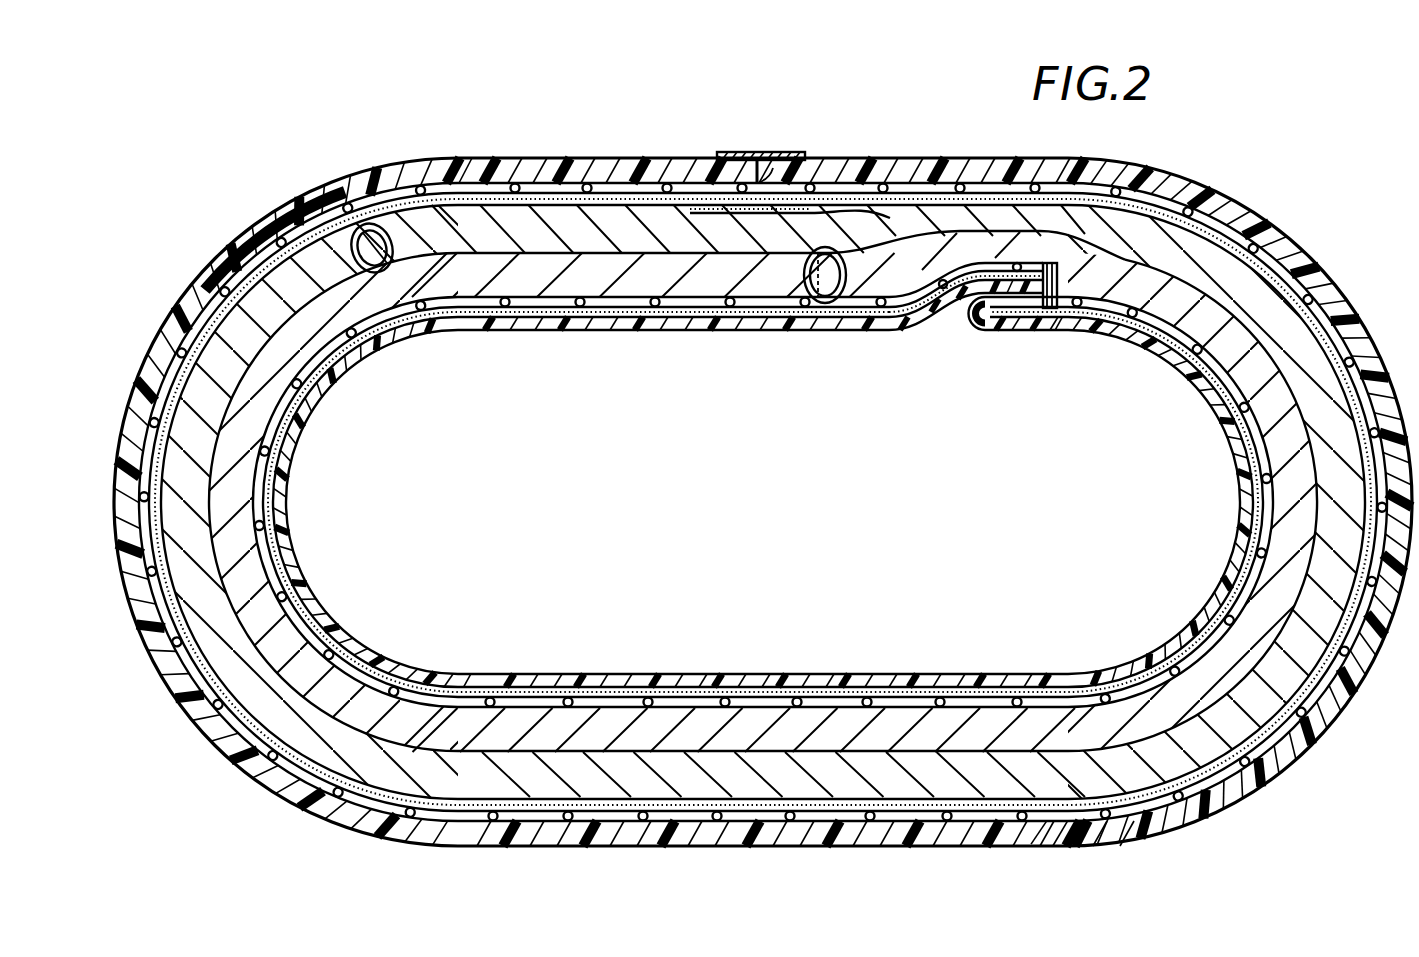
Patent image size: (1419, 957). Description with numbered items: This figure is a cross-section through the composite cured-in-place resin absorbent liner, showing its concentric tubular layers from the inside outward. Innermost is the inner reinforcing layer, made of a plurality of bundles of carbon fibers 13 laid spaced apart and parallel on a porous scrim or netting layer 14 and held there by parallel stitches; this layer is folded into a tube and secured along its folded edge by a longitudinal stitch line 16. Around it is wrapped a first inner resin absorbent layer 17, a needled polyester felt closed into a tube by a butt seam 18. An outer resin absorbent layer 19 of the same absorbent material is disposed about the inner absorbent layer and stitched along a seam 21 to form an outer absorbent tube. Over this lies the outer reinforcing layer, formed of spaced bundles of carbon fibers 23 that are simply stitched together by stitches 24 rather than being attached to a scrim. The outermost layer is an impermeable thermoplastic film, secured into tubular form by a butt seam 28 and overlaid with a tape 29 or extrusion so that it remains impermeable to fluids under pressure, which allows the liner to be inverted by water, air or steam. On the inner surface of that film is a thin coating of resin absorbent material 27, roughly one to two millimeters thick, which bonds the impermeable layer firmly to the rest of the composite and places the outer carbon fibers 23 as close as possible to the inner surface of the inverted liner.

The carbon fibers 13 is at (628, 320).
The porous scrim or netting layer 14 is at (912, 328).
The longitudinal stitch line 16 is at (1080, 320).
The first inner resin absorbent layer 17 is at (273, 377).
The butt seam 18 is at (806, 273).
The outer resin absorbent layer 19 is at (275, 288).
The seam 21 is at (360, 268).
The carbon fibers 23 is at (388, 185).
The stitches 24 is at (294, 232).
The coating of resin absorbent material 27 is at (594, 182).
The butt seam 28 is at (818, 172).
The tape 29 is at (755, 153).